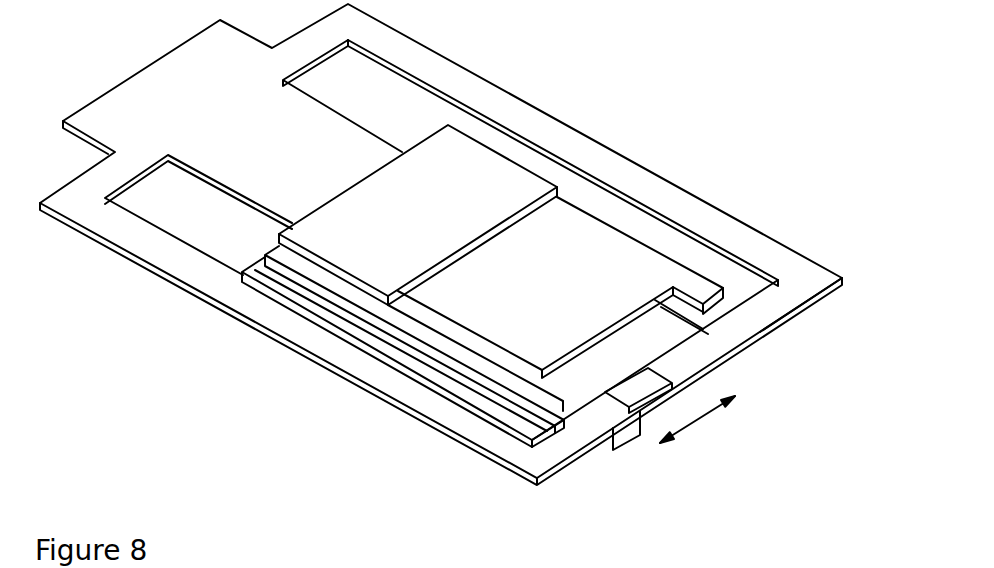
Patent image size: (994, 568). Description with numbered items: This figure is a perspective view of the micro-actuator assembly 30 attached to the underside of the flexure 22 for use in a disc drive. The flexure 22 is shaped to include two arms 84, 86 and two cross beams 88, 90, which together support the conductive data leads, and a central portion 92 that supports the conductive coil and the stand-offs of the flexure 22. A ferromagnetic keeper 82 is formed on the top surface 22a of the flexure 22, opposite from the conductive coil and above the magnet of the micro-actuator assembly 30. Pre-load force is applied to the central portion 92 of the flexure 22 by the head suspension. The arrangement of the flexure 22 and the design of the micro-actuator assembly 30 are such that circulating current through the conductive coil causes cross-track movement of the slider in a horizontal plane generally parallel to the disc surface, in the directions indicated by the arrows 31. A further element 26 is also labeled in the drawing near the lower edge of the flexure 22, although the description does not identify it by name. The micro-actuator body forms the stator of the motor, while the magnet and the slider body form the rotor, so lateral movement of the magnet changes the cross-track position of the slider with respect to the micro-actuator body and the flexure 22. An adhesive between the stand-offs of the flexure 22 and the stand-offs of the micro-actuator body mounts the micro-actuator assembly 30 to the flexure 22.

The flexure 22 is at (602, 138).
The top surface of the flexure 22a is at (660, 190).
The lead 26 is at (637, 435).
The micro-actuator assembly 30 is at (240, 272).
The arrows 31 is at (693, 432).
The ferromagnetic keeper 82 is at (473, 173).
The arm 84 is at (757, 245).
The arm 86 is at (407, 390).
The cross beam 88 is at (720, 337).
The cross beam 90 is at (610, 410).
The central portion 92 is at (623, 262).